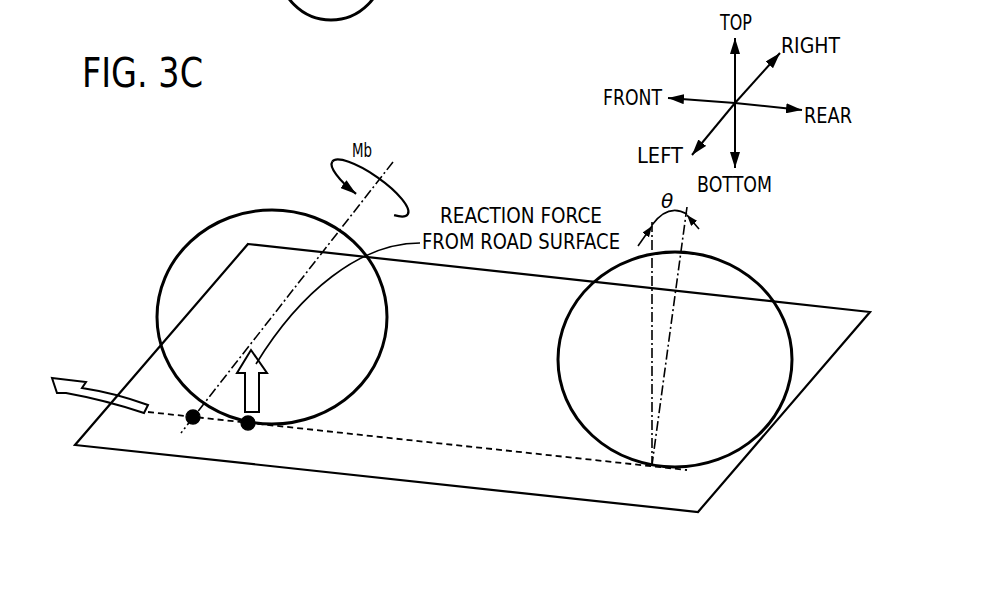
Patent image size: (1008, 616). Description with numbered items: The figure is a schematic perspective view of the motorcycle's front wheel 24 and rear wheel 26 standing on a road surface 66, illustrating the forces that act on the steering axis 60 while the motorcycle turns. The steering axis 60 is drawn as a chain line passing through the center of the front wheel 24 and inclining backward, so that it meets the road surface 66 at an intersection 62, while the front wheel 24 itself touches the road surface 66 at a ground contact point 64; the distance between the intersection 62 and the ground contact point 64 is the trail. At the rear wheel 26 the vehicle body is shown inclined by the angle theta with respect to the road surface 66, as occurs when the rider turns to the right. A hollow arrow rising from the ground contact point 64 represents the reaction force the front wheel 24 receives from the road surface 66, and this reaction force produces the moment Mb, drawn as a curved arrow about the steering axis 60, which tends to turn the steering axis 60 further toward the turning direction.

The front wheel 24 is at (193, 244).
The rear wheel 26 is at (761, 279).
The steering axis 60 is at (393, 164).
The intersection 62 is at (188, 420).
The ground contact point 64 is at (246, 430).
The road surface 66 is at (818, 307).